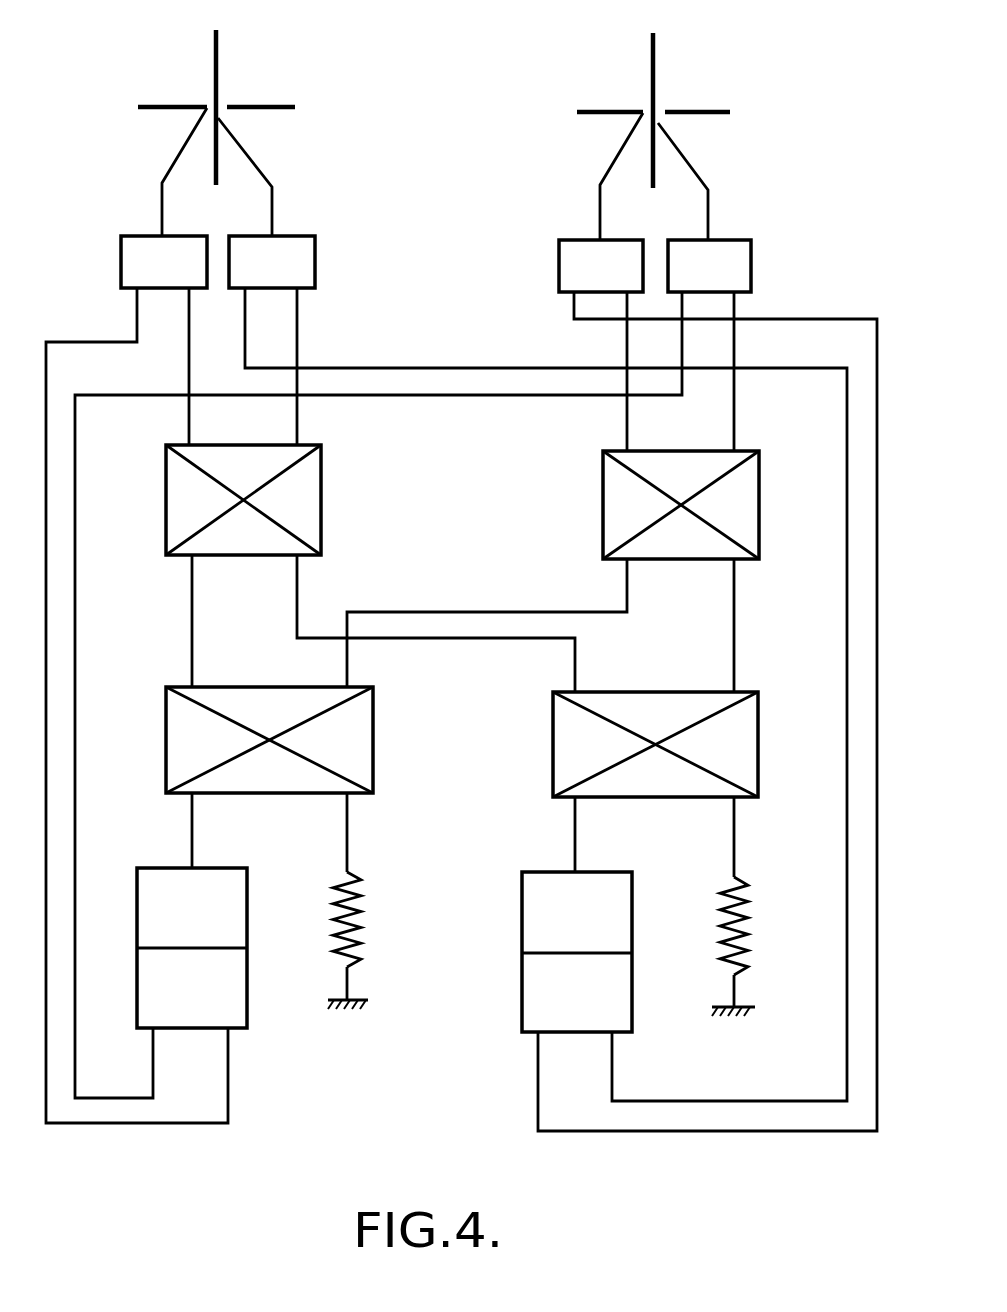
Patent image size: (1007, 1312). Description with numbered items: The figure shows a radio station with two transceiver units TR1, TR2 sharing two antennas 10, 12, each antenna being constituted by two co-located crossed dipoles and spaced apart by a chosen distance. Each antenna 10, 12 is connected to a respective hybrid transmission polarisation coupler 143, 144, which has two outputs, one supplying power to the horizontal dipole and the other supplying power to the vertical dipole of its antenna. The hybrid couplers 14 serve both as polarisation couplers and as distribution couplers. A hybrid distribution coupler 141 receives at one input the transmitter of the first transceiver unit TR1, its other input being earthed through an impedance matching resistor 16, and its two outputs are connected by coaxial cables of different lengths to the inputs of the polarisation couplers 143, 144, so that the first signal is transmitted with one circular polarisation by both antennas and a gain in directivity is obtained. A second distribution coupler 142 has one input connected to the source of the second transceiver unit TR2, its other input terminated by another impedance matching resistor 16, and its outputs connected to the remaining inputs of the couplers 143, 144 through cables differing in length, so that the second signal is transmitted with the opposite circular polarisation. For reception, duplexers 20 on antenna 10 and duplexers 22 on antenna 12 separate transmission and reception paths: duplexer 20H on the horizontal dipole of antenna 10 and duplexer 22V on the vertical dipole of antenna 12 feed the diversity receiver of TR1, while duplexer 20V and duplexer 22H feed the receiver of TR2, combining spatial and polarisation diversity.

The antenna 10 is at (178, 90).
The antenna 12 is at (677, 92).
The hybrid coupler 14 is at (470, 618).
The hybrid distribution coupler 141 is at (375, 730).
The second distribution coupler 142 is at (552, 757).
The hybrid transmission polarisation coupler 143 is at (323, 494).
The hybrid transmission polarisation coupler 144 is at (603, 497).
The impedance matching resistor 16 is at (352, 945).
The duplexer 20 is at (221, 267).
The duplexer 20H is at (121, 256).
The duplexer 20V is at (315, 272).
The duplexer 22 is at (663, 278).
The duplexer 22H is at (559, 277).
The duplexer 22V is at (752, 277).
The transceiver unit TR1 is at (137, 950).
The second transceiver unit TR2 is at (522, 953).